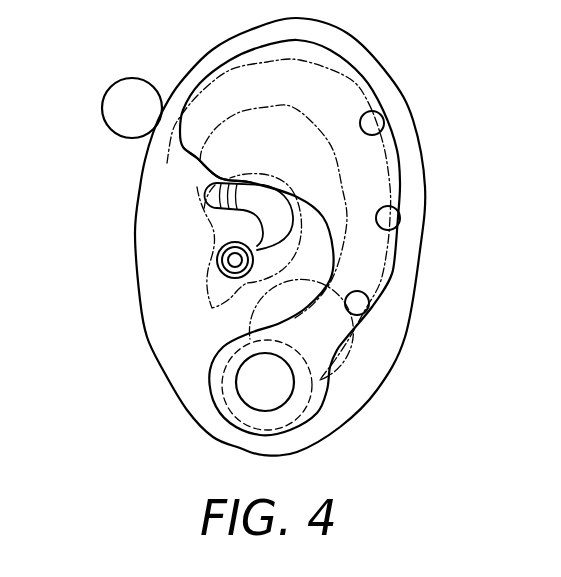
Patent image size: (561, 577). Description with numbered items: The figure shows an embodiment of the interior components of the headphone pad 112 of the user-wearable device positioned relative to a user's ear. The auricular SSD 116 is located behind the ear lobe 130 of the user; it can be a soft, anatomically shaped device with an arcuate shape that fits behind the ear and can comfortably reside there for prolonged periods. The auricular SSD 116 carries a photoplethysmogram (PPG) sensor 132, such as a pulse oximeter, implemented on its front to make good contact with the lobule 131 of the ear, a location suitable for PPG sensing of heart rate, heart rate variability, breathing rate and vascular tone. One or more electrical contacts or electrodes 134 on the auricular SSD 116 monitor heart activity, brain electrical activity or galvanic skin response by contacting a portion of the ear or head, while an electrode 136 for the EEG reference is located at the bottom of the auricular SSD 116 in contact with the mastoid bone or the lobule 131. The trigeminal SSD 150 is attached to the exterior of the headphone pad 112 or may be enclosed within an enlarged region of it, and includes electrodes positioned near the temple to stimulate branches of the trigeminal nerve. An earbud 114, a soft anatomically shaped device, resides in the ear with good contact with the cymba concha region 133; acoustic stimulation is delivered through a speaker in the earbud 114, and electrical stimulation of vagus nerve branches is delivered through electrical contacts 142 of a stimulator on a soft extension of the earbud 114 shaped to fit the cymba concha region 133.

The headphone pad 112 is at (390, 78).
The earbud 114 is at (217, 260).
The auricular SSD 116 is at (348, 340).
The ear lobe 130 is at (318, 63).
The lobule 131 is at (222, 397).
The photoplethysmogram (PPG) sensor 132 is at (273, 383).
The cymba concha region 133 is at (200, 187).
The electrical contacts (electrodes) 134 is at (373, 125).
The electrical contact (electrode) for EEG reference 136 is at (302, 407).
The electrical contacts 142 is at (222, 219).
The trigeminal SSD 150 is at (108, 87).